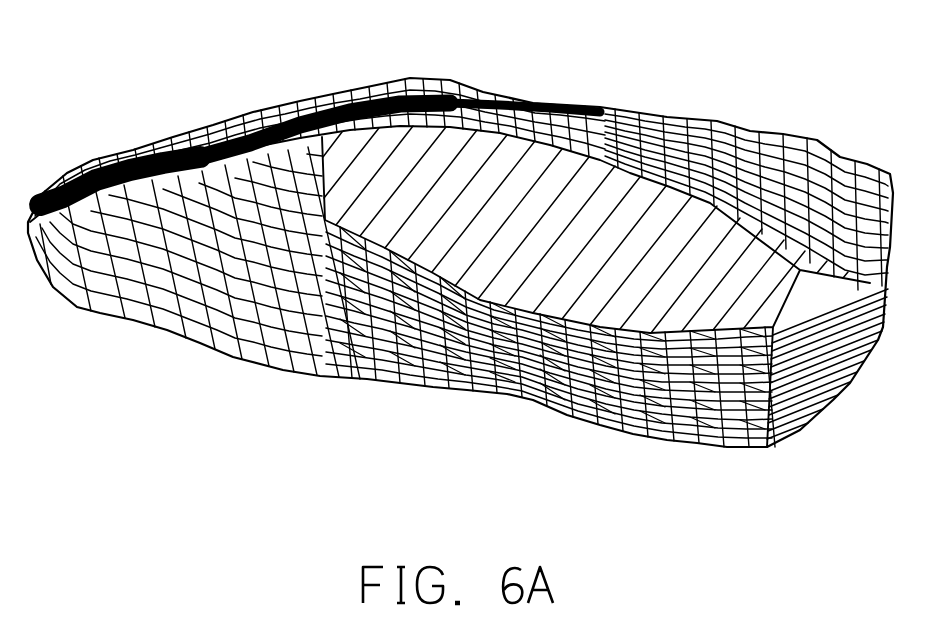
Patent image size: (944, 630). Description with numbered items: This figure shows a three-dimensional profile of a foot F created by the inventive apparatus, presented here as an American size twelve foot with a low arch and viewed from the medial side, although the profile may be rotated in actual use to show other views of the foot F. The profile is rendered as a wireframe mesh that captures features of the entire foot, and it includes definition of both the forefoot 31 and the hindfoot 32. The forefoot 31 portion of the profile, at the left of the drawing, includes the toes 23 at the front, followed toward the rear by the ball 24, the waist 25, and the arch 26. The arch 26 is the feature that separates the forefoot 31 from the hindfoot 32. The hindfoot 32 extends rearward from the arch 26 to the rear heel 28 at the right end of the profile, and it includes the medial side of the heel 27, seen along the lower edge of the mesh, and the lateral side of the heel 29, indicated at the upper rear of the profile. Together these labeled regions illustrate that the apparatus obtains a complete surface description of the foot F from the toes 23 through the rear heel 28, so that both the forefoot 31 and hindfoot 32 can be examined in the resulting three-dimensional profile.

The foot F is at (548, 85).
The toes 23 is at (78, 316).
The ball 24 is at (200, 357).
The waist 25 is at (300, 377).
The arch 26 is at (515, 393).
The medial side of the heel 27 is at (667, 440).
The rear heel 28 is at (845, 392).
The lateral side of the heel 29 is at (852, 157).
The forefoot 31 is at (120, 372).
The hindfoot 32 is at (713, 470).